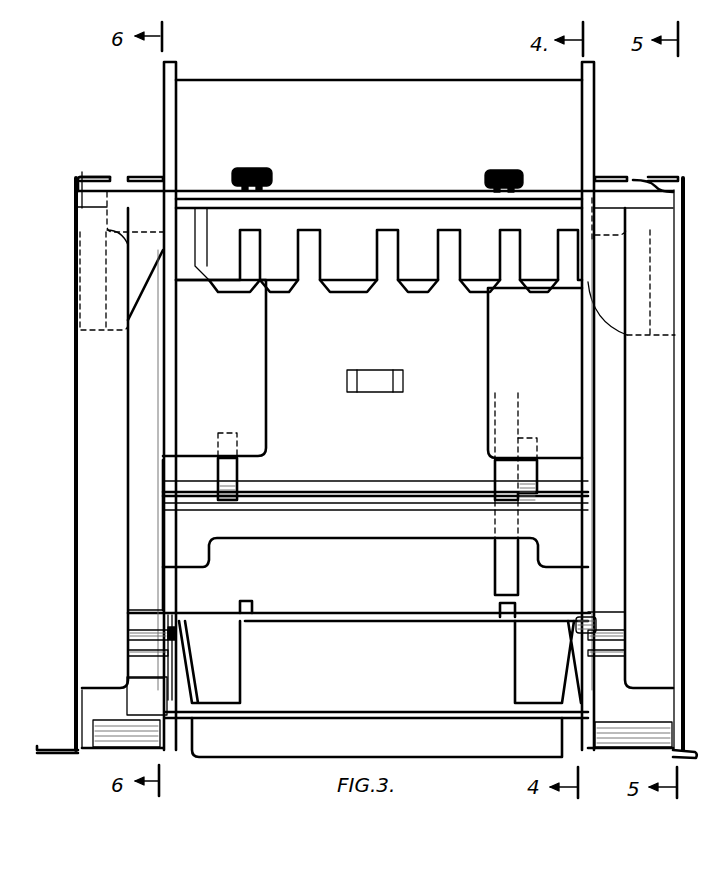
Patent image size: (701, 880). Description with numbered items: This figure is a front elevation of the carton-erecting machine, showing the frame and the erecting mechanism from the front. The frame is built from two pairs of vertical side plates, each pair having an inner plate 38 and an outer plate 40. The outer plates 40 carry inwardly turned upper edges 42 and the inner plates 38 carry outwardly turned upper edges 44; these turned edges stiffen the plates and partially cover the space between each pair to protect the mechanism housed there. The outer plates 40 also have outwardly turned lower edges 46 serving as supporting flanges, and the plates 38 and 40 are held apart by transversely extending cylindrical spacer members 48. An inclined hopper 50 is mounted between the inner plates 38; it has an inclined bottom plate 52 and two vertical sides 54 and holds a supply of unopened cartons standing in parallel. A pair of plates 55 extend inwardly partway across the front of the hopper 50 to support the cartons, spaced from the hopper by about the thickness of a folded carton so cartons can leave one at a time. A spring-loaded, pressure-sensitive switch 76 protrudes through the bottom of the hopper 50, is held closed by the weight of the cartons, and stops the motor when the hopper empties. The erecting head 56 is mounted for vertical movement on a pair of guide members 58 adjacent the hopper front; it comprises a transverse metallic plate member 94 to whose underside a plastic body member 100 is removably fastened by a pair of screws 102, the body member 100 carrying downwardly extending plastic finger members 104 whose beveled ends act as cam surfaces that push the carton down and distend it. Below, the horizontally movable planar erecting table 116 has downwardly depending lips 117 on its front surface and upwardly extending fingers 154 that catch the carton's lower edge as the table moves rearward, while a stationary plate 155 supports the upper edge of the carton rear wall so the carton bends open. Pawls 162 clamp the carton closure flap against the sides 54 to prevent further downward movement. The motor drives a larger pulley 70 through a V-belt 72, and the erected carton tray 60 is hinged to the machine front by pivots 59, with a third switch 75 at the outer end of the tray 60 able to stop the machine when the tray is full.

The inner plate 38 is at (160, 215).
The outer plate 40 is at (75, 212).
The inwardly turned upper edge 42 is at (90, 175).
The outwardly turned upper edge 44 is at (142, 173).
The outwardly turned lower edge 46 is at (50, 748).
The cylindrical spacer member 48 is at (127, 742).
The inclined hopper 50 is at (150, 79).
The inclined bottom plate 52 is at (387, 128).
The vertical side 54 is at (177, 120).
The plate 55 is at (249, 338).
The erecting head 56 is at (435, 306).
The guide member 58 is at (78, 183).
The pivot 59 is at (137, 642).
The tray 60 is at (377, 712).
The larger pulley 70 is at (519, 577).
The V-belt 72 is at (507, 548).
The third switch 75 is at (138, 705).
The pressure-sensitive switch 76 is at (377, 374).
The transverse metallic plate member 94 is at (300, 197).
The plastic body member 100 is at (356, 221).
The screw 102 is at (253, 167).
The plastic finger member 104 is at (406, 282).
The erecting table 116 is at (368, 618).
The downwardly depending lip 117 is at (230, 663).
The upwardly extending finger 154 is at (250, 602).
The stationary plate 155 is at (392, 531).
The pawl 162 is at (237, 469).